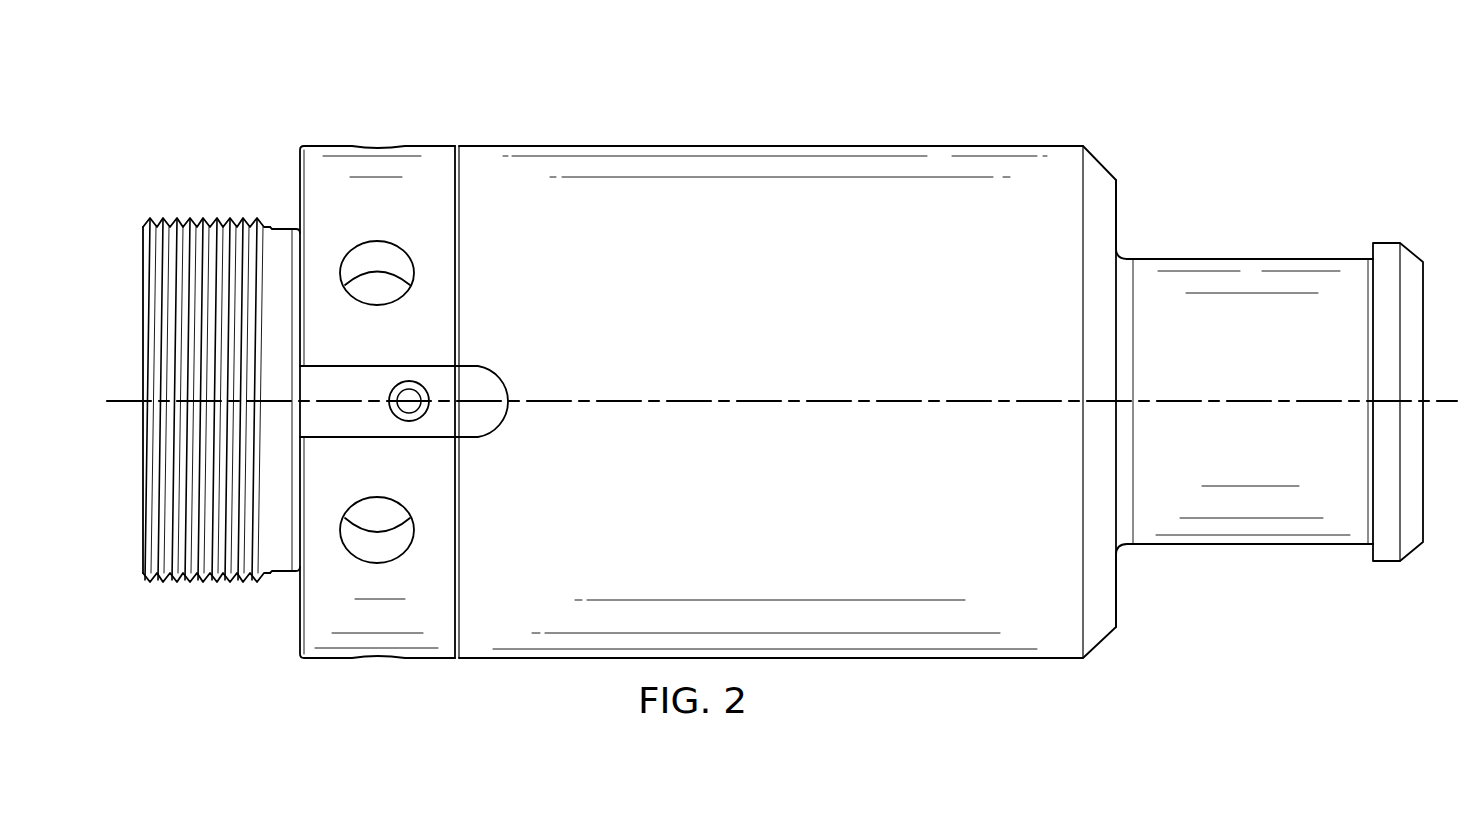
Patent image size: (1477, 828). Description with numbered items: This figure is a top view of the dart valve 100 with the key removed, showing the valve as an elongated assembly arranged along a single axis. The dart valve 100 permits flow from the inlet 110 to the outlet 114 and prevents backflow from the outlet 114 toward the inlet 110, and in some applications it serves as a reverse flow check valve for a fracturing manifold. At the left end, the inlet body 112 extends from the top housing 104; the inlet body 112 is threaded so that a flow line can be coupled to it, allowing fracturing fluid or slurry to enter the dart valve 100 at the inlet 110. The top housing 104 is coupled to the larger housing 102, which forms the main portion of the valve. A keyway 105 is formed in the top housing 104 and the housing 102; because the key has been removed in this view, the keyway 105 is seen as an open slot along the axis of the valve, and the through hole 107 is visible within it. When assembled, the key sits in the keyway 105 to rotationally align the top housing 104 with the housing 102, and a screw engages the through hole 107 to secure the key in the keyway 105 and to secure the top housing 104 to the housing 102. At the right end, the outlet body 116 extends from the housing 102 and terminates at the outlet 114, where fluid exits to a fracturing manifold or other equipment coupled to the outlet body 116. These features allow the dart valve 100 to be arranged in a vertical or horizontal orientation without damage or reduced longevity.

The dart valve 100 is at (813, 90).
The housing 102 is at (936, 156).
The top housing 104 is at (434, 152).
The keyway 105 is at (494, 384).
The through hole 107 is at (409, 421).
The inlet 110 is at (121, 240).
The inlet body 112 is at (207, 218).
The outlet 114 is at (1447, 274).
The outlet body 116 is at (1251, 268).